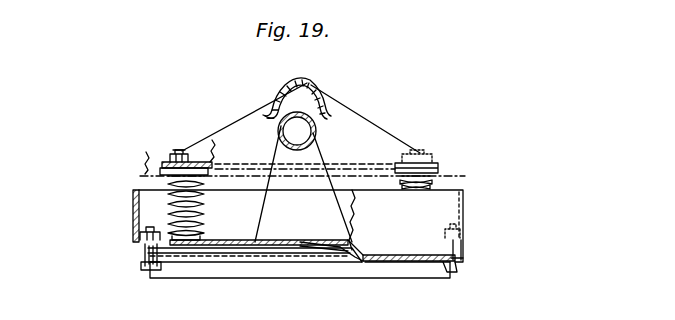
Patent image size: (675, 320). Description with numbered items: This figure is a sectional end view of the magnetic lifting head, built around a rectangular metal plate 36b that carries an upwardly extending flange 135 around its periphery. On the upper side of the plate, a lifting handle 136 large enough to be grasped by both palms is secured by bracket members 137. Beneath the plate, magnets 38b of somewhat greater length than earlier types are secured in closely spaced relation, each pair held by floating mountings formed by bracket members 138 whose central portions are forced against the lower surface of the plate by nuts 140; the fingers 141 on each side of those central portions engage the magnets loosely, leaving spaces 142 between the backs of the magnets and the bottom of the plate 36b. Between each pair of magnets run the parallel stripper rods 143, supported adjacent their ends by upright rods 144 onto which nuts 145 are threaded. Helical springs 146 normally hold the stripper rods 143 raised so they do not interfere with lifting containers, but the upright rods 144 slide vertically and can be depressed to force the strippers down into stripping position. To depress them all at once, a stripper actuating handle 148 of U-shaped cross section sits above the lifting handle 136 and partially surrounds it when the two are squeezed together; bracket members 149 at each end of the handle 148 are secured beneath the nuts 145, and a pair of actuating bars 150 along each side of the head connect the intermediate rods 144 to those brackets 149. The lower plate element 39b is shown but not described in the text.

The flange 135 is at (133, 202).
The handle 136 is at (315, 132).
The bracket member 137 is at (264, 210).
The bracket member 138 is at (143, 255).
The nut 140 is at (140, 236).
The finger 141 is at (452, 270).
The space 142 is at (385, 252).
The stripper rod 143 is at (283, 280).
The upright rod 144 is at (178, 153).
The nut 145 is at (162, 157).
The helical spring 146 is at (165, 172).
The stripper actuating handle 148 is at (311, 77).
The bracket member 149 is at (232, 121).
The actuating bar 150 is at (202, 172).
The rectangular metal plate 36b is at (392, 254).
The magnet 38b is at (186, 280).
The bottom plate 39b is at (408, 261).